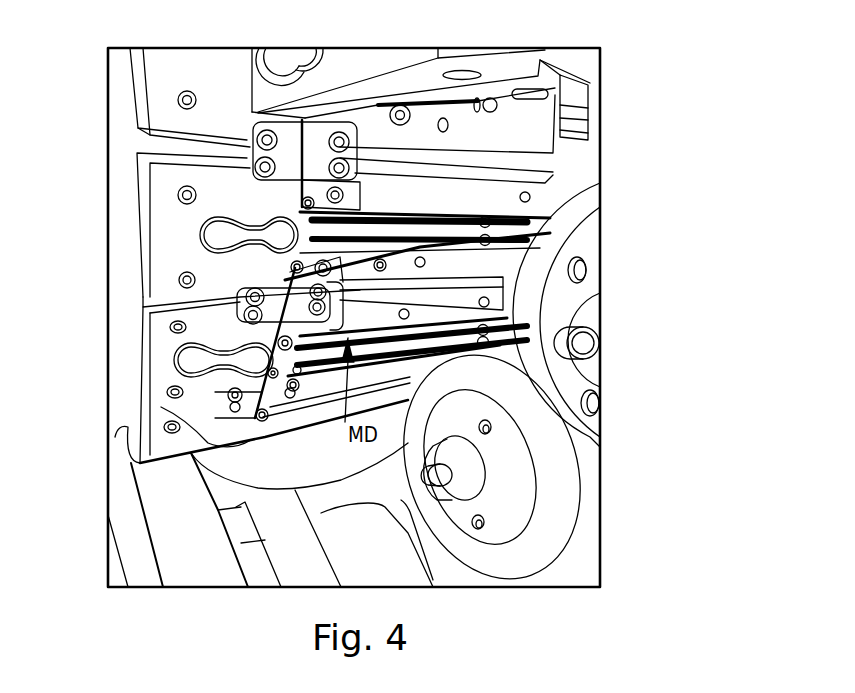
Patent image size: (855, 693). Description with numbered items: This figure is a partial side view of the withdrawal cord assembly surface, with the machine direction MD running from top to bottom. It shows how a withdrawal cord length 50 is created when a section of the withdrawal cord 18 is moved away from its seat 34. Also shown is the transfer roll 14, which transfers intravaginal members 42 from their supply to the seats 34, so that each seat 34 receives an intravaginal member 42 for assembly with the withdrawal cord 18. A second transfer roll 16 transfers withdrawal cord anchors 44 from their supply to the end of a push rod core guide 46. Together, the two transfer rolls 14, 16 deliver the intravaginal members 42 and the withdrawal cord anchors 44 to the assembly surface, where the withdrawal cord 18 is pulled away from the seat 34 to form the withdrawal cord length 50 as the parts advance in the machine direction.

The transfer roll 14 is at (171, 517).
The transfer roll 16 is at (553, 503).
The withdrawal cord 18 is at (160, 400).
The seat 34 is at (200, 250).
The intravaginal member 42 is at (200, 228).
The withdrawal cord anchor 44 is at (528, 105).
The push rod core guide 46 is at (567, 83).
The withdrawal cord length 50 is at (387, 203).